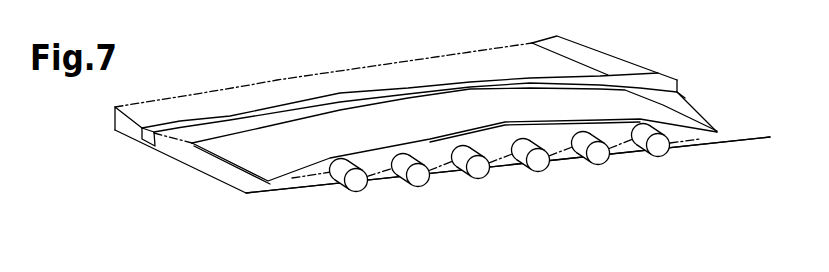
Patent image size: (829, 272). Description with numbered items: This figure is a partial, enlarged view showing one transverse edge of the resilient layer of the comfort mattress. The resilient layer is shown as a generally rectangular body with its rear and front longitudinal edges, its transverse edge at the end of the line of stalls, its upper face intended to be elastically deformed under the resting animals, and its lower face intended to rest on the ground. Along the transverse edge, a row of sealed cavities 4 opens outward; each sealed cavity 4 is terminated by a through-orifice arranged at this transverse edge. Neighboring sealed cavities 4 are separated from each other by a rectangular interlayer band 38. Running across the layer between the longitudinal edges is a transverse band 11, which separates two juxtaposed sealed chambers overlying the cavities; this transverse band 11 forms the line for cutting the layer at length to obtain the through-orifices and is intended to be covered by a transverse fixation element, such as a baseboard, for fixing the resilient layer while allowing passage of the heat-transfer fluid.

The transverse band 11 is at (703, 133).
The interlayer band 38 is at (499, 158).
The sealed cavity 4 is at (546, 166).